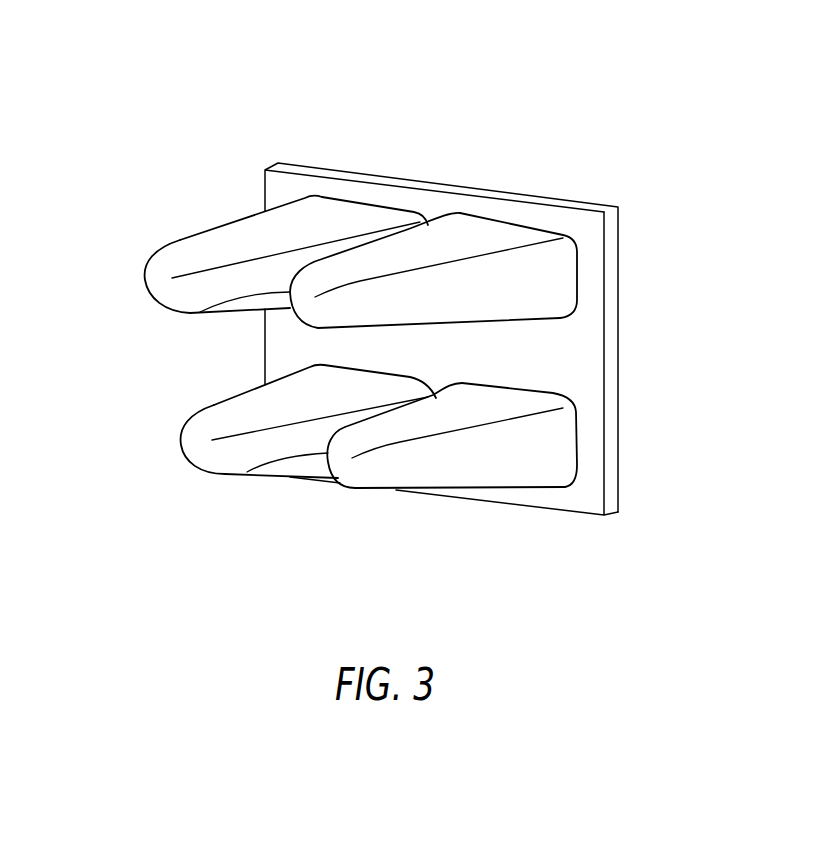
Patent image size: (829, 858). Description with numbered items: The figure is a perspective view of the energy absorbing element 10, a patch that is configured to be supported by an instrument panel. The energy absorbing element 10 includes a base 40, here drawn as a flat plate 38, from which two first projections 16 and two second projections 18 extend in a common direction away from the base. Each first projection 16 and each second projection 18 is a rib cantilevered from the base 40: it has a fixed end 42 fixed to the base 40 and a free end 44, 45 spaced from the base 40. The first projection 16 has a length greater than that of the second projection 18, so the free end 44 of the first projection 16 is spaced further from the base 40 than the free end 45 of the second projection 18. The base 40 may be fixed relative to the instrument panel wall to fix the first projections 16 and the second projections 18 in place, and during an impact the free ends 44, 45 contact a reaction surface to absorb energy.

The energy absorbing element 10 is at (80, 126).
The first projection 16 is at (385, 273).
The second projection 18 is at (397, 440).
The base plate 38 is at (371, 158).
The base 40 is at (582, 495).
The fixed end 42 is at (483, 217).
The free end 44 is at (203, 310).
The free end 45 is at (247, 473).